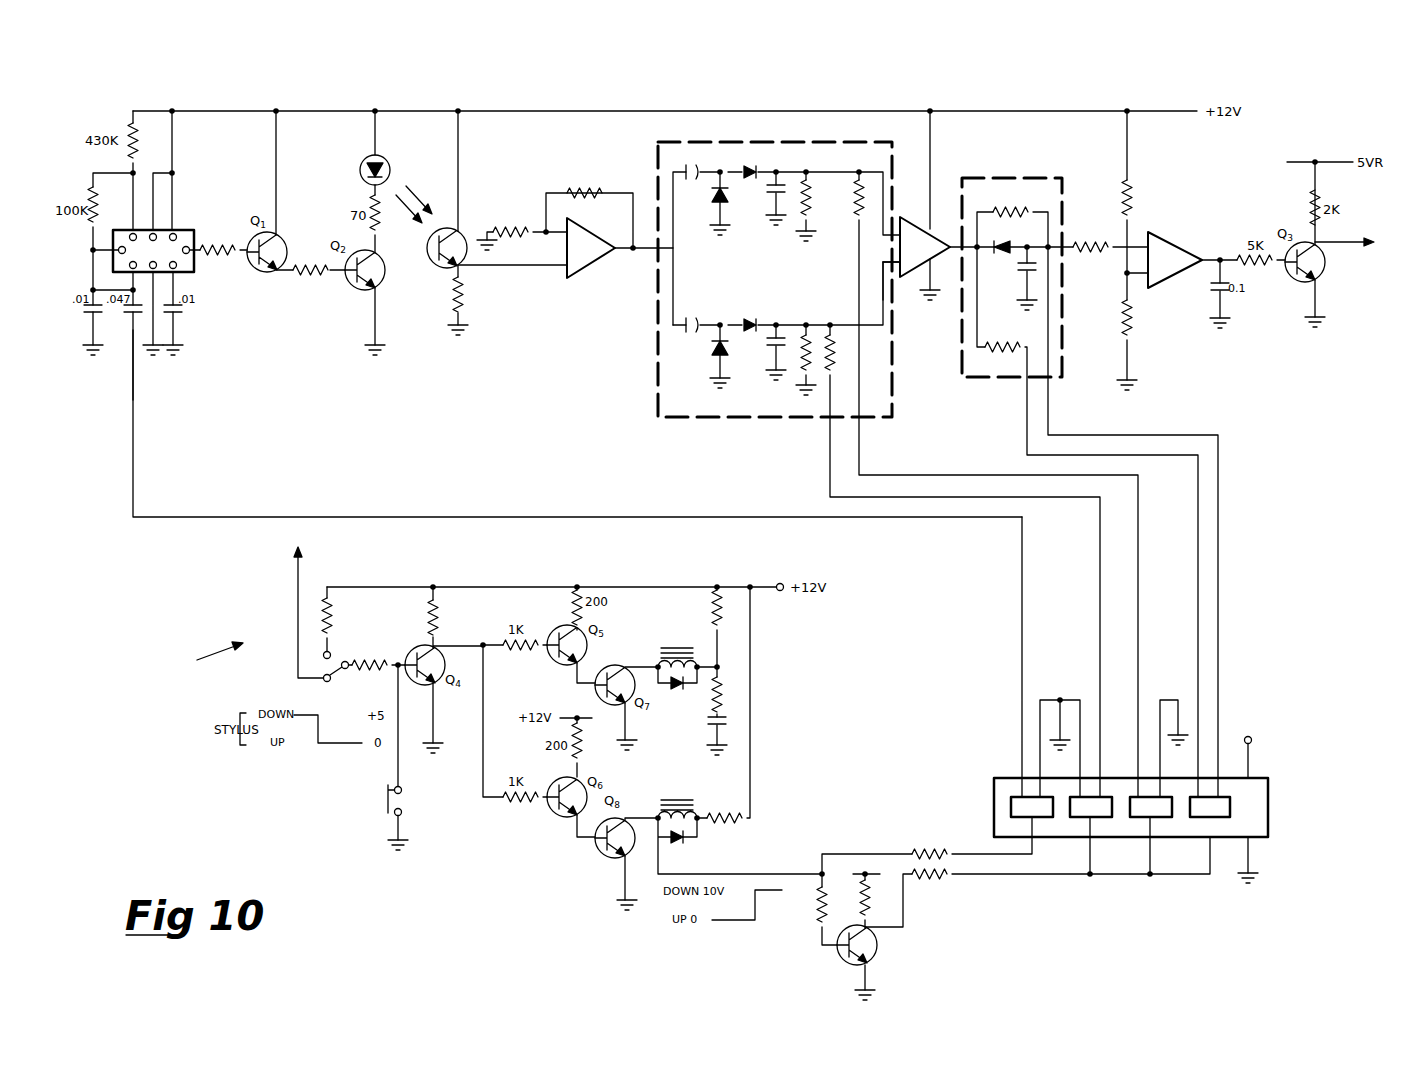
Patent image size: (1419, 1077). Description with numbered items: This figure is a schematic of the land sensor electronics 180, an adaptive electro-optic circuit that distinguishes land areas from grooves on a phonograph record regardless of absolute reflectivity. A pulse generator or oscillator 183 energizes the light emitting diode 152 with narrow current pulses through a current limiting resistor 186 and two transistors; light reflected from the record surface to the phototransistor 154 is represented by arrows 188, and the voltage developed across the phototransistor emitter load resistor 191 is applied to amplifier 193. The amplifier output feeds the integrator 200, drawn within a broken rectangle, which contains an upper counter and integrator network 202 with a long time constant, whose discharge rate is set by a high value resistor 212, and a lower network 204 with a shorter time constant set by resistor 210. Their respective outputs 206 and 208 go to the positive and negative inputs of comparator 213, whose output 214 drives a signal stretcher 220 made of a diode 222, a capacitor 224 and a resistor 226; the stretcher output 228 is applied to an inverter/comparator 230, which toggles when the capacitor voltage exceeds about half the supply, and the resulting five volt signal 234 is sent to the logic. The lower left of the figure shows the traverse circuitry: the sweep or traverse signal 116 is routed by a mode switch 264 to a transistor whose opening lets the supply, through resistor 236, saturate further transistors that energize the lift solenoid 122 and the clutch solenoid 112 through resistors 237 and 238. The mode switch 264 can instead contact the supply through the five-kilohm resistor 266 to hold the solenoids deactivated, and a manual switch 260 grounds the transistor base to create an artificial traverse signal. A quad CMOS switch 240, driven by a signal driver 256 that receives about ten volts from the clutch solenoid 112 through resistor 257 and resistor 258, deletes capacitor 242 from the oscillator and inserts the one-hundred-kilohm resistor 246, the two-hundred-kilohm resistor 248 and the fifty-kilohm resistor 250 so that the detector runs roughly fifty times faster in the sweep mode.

The clutch solenoid 112 is at (697, 804).
The sweep or traverse signal 116 is at (298, 602).
The lift solenoid 122 is at (683, 646).
The light emitting diode 152 is at (368, 158).
The phototransistor 154 is at (464, 234).
The land sensor electronics 180 is at (200, 661).
The pulse generator or oscillator 183 is at (182, 234).
The current limiting resistor 186 is at (226, 256).
The arrows representing reflected light 188 is at (404, 195).
The phototransistor emitter load resistor 191 is at (454, 294).
The amplifier 193 is at (582, 276).
The integrator 200 is at (658, 152).
The upper counter and integrator network portion 202 is at (800, 158).
The lower counter and integrator network portion 204 is at (712, 344).
The output voltage of long-term network 206 is at (900, 217).
The output of short-term network 208 is at (892, 279).
The resistor 210 is at (807, 333).
The high value resistor 212 is at (810, 200).
The comparator 213 is at (944, 240).
The comparator output 214 is at (955, 268).
The signal stretcher 220 is at (1015, 178).
The diode 222 is at (1004, 256).
The capacitor 224 is at (1036, 274).
The resistor 226 is at (1035, 208).
The output of the signal stretcher 228 is at (1141, 231).
The inverter/comparator 230 is at (1167, 236).
The five volt output signal 234 is at (1356, 241).
The resistor 236 is at (430, 618).
The resistor 237 is at (736, 616).
The resistor 238 is at (743, 816).
The quad CMOS switch 240 is at (1268, 792).
The capacitor 242 is at (128, 328).
The 100k resistor 246 is at (829, 333).
The 200k resistor 248 is at (859, 222).
The 50k resistor 250 is at (1008, 347).
The signal driver 256 is at (910, 916).
The resistor 257 is at (914, 846).
The resistor 258 is at (818, 904).
The manual switch 260 is at (384, 812).
The mode switch 264 is at (342, 674).
The 5k resistor 266 is at (318, 598).